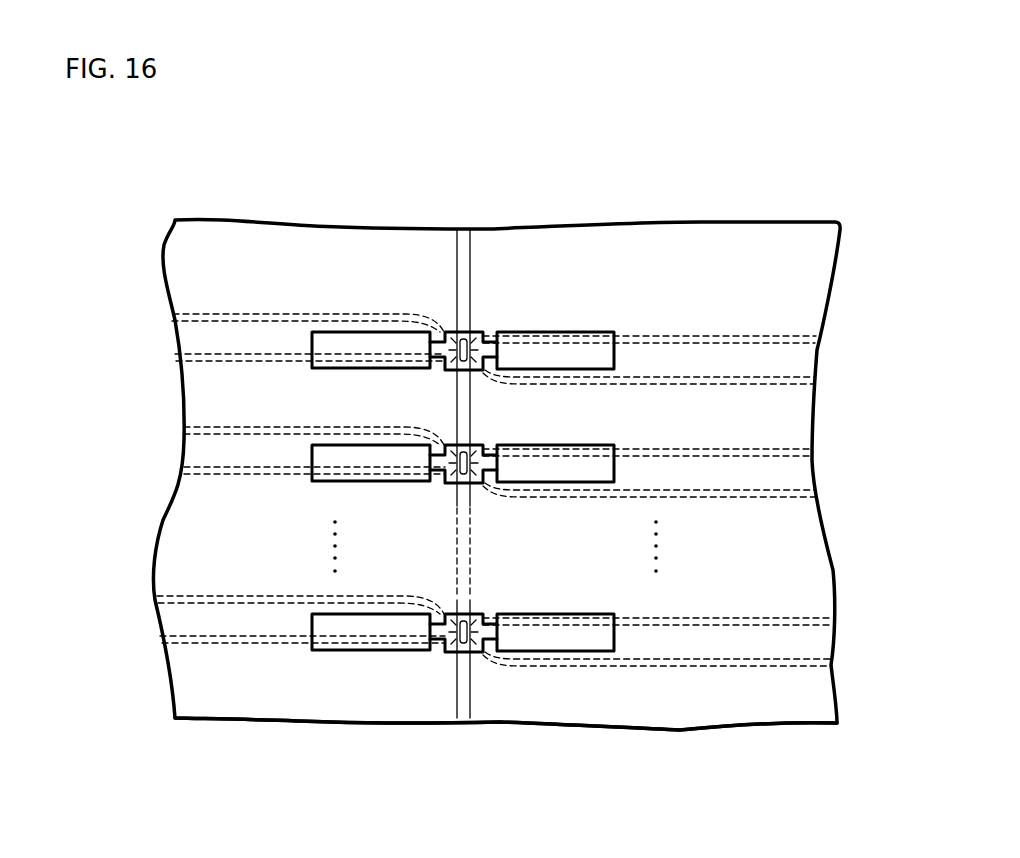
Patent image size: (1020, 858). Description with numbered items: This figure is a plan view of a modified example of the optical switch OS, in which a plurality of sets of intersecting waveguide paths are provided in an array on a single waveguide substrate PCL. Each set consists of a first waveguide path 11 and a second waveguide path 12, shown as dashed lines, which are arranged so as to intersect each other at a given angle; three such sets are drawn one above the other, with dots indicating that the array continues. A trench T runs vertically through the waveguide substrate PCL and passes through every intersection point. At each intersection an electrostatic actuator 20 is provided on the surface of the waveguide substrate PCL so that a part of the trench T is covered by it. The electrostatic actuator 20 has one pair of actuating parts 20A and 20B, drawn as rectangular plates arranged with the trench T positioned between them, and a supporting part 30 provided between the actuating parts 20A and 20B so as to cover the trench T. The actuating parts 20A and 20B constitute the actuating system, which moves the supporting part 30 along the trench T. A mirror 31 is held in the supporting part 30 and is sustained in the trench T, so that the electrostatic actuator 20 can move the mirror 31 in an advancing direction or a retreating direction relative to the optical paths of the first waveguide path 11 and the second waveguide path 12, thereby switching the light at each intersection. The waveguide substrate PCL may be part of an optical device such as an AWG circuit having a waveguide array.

The first waveguide path 11 is at (210, 314).
The second waveguide path 12 is at (768, 336).
The electrostatic actuator 20 is at (430, 452).
The actuating part 20A is at (340, 452).
The actuating part 20B is at (563, 470).
The supporting part 30 is at (479, 452).
The mirror 31 is at (470, 346).
The trench T is at (465, 228).
The waveguide substrate PCL is at (789, 258).
The optical switch OS is at (423, 756).